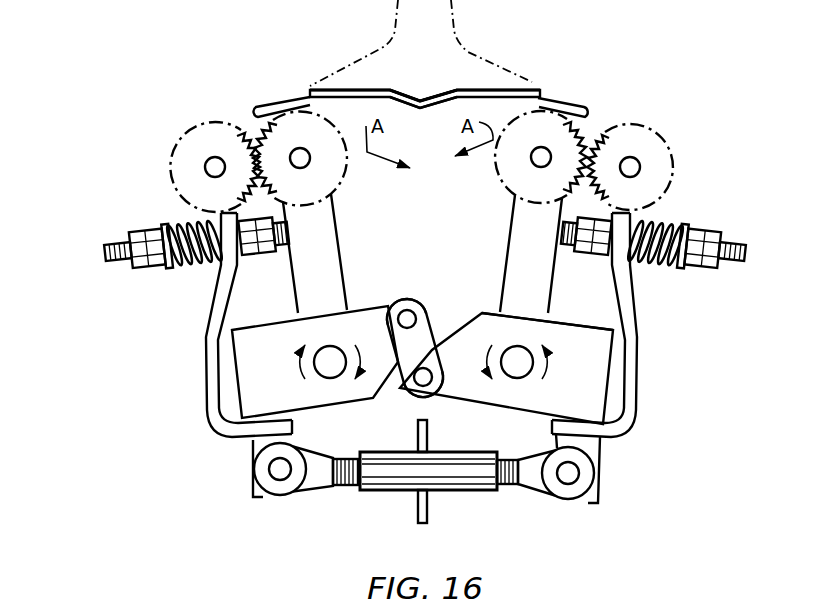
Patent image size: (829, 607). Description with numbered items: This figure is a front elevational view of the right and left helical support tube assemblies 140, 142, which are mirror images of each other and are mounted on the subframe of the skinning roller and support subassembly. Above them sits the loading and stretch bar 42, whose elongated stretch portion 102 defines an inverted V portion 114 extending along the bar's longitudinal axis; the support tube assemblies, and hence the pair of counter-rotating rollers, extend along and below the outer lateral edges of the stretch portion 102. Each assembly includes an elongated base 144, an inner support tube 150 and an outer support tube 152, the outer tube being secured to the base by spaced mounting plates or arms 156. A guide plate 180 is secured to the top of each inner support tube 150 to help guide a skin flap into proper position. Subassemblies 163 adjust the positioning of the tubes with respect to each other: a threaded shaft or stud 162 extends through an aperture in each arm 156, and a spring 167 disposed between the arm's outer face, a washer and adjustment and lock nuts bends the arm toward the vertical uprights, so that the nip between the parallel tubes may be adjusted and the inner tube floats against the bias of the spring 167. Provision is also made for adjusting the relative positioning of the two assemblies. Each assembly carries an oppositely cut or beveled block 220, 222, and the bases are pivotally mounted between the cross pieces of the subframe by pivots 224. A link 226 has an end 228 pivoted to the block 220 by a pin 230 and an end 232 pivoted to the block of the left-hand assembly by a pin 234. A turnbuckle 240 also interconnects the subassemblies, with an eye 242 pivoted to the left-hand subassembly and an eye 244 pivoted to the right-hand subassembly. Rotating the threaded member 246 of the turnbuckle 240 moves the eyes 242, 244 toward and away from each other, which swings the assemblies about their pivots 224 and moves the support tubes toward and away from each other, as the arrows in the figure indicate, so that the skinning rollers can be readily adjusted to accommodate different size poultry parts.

The loading and stretch bar 42 is at (501, 82).
The stretch portion 102 is at (355, 84).
The inverted V portion 114 is at (426, 88).
The right helical support tube assembly 140 is at (166, 136).
The left helical support tube assembly 142 is at (614, 105).
The elongated base 144 is at (569, 332).
The inner support tube 150 is at (541, 128).
The outer support tube 152 is at (657, 130).
The mounting plate or arm 156 is at (204, 337).
The threaded shaft or stud 162 is at (159, 229).
The adjustment subassembly 163 is at (147, 248).
The spring 167 is at (195, 243).
The guide plate 180 is at (587, 106).
The beveled block 220 is at (273, 332).
The beveled block 222 is at (512, 341).
The pivot 224 is at (520, 351).
The link 226 is at (417, 335).
The link end 228 is at (407, 318).
The pin 230 is at (421, 304).
The link end 232 is at (425, 393).
The pin 234 is at (421, 383).
The turnbuckle 240 is at (416, 492).
The eye 242 is at (582, 472).
The eye 244 is at (266, 467).
The threaded member 246 is at (466, 476).